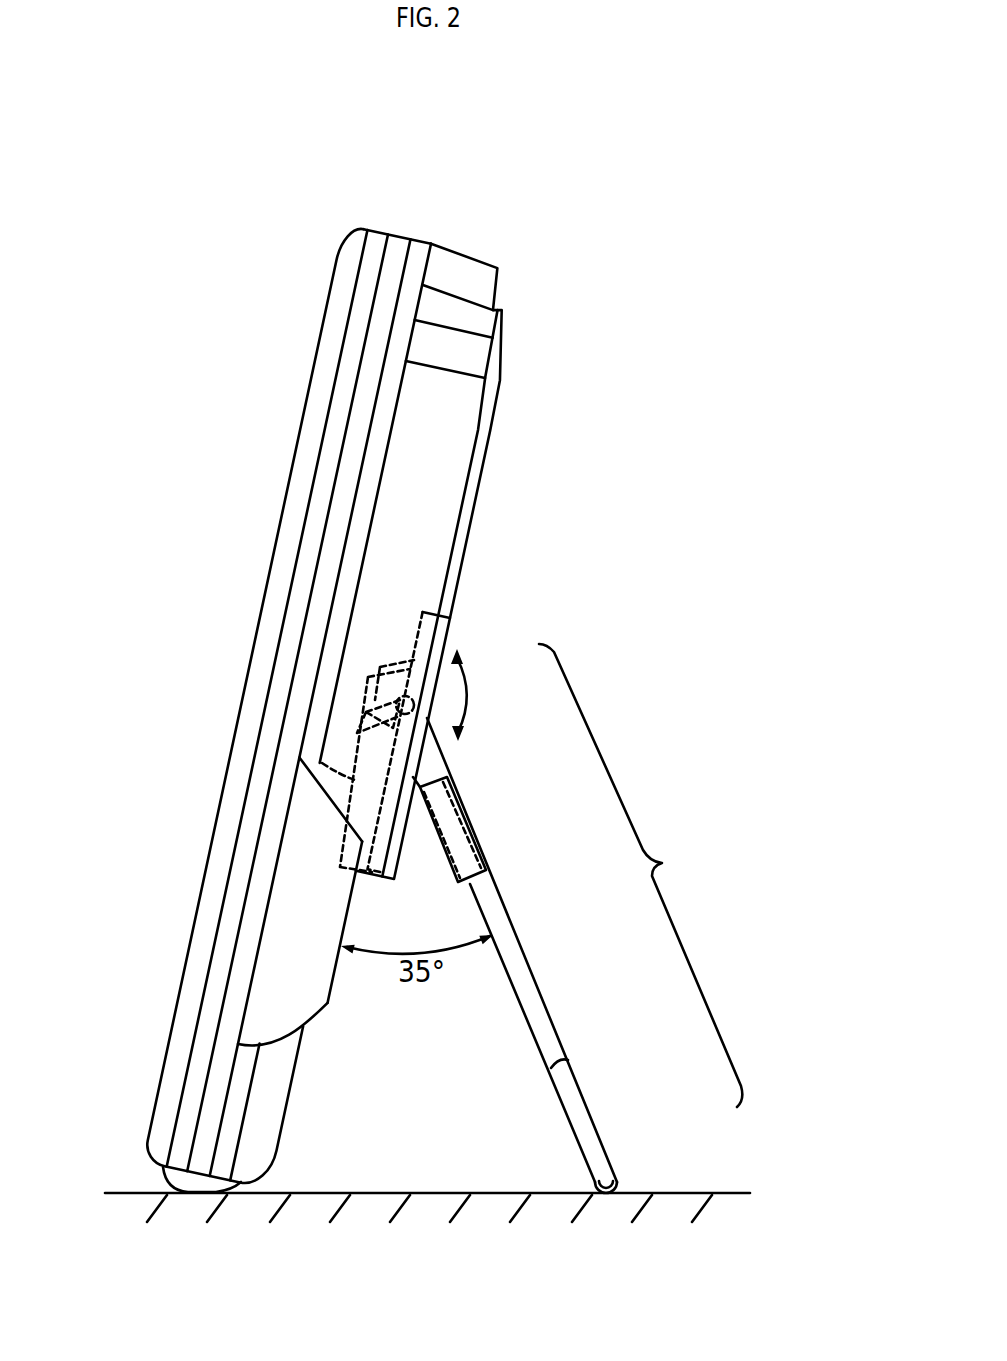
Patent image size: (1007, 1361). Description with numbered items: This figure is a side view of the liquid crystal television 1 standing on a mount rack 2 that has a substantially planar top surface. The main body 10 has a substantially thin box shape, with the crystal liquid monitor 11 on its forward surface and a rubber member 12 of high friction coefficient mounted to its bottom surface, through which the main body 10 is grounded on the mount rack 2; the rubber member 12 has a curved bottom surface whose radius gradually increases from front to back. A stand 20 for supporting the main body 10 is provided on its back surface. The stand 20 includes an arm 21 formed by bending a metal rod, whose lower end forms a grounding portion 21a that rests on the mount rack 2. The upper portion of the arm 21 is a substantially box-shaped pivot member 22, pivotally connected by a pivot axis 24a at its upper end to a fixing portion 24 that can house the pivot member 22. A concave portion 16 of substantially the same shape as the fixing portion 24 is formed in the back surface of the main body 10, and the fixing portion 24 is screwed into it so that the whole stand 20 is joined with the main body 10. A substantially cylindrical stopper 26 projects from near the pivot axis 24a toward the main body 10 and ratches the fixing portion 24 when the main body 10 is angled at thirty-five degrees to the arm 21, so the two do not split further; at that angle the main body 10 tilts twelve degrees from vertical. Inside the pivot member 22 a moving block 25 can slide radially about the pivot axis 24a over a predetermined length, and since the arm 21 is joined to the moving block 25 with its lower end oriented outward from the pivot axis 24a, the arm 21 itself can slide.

The crystal liquid television 1 is at (403, 235).
The mount rack 2 is at (540, 1218).
The main body 10 is at (444, 451).
The crystal liquid monitor 11 is at (289, 487).
The rubber member 12 is at (163, 1168).
The concave portion 16 is at (357, 735).
The stand 20 is at (577, 918).
The arm 21 is at (526, 966).
The grounding portion 21a is at (622, 1172).
The pivot member 22 is at (455, 818).
The fixing portion 24 is at (418, 647).
The pivot axis 24a is at (433, 698).
The moving block 25 is at (487, 854).
The stopper 26 is at (415, 750).